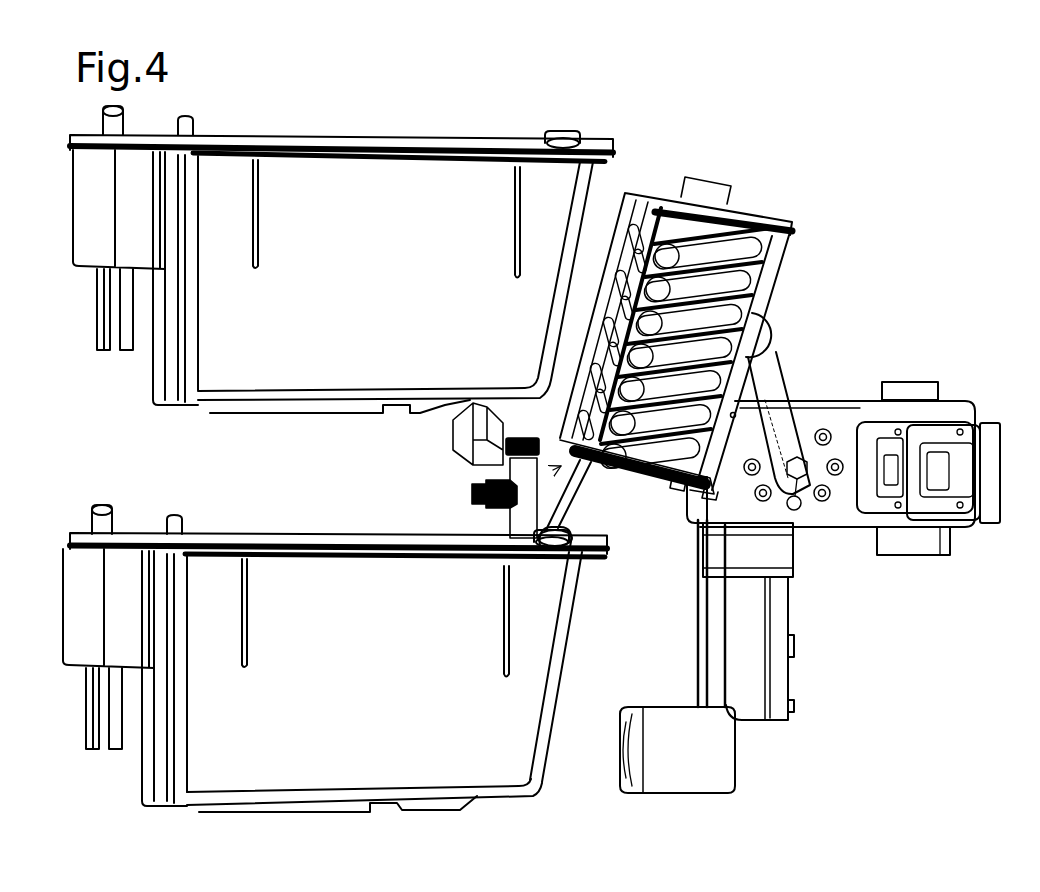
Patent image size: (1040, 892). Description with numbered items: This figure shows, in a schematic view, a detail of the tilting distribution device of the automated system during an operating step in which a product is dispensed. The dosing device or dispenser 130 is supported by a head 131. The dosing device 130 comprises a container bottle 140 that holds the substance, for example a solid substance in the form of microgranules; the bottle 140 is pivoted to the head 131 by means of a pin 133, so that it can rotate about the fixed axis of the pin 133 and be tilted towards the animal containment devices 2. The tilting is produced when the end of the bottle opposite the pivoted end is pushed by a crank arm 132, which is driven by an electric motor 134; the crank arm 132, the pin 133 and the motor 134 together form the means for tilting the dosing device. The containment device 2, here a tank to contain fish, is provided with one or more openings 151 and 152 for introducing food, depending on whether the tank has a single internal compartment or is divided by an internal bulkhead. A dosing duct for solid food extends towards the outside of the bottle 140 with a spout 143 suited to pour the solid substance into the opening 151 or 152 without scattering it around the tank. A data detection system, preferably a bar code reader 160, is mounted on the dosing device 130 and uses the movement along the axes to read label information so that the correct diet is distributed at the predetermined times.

The animal containment device 2 is at (387, 174).
The dosing device 130 is at (763, 182).
The head 131 is at (898, 412).
The crank arm 132 is at (778, 384).
The pin 133 is at (700, 525).
The electric motor 134 is at (776, 665).
The container bottle 140 is at (712, 300).
The spout 143 is at (470, 485).
The opening 151 is at (569, 566).
The opening 152 is at (570, 525).
The bar code reader 160 is at (746, 775).